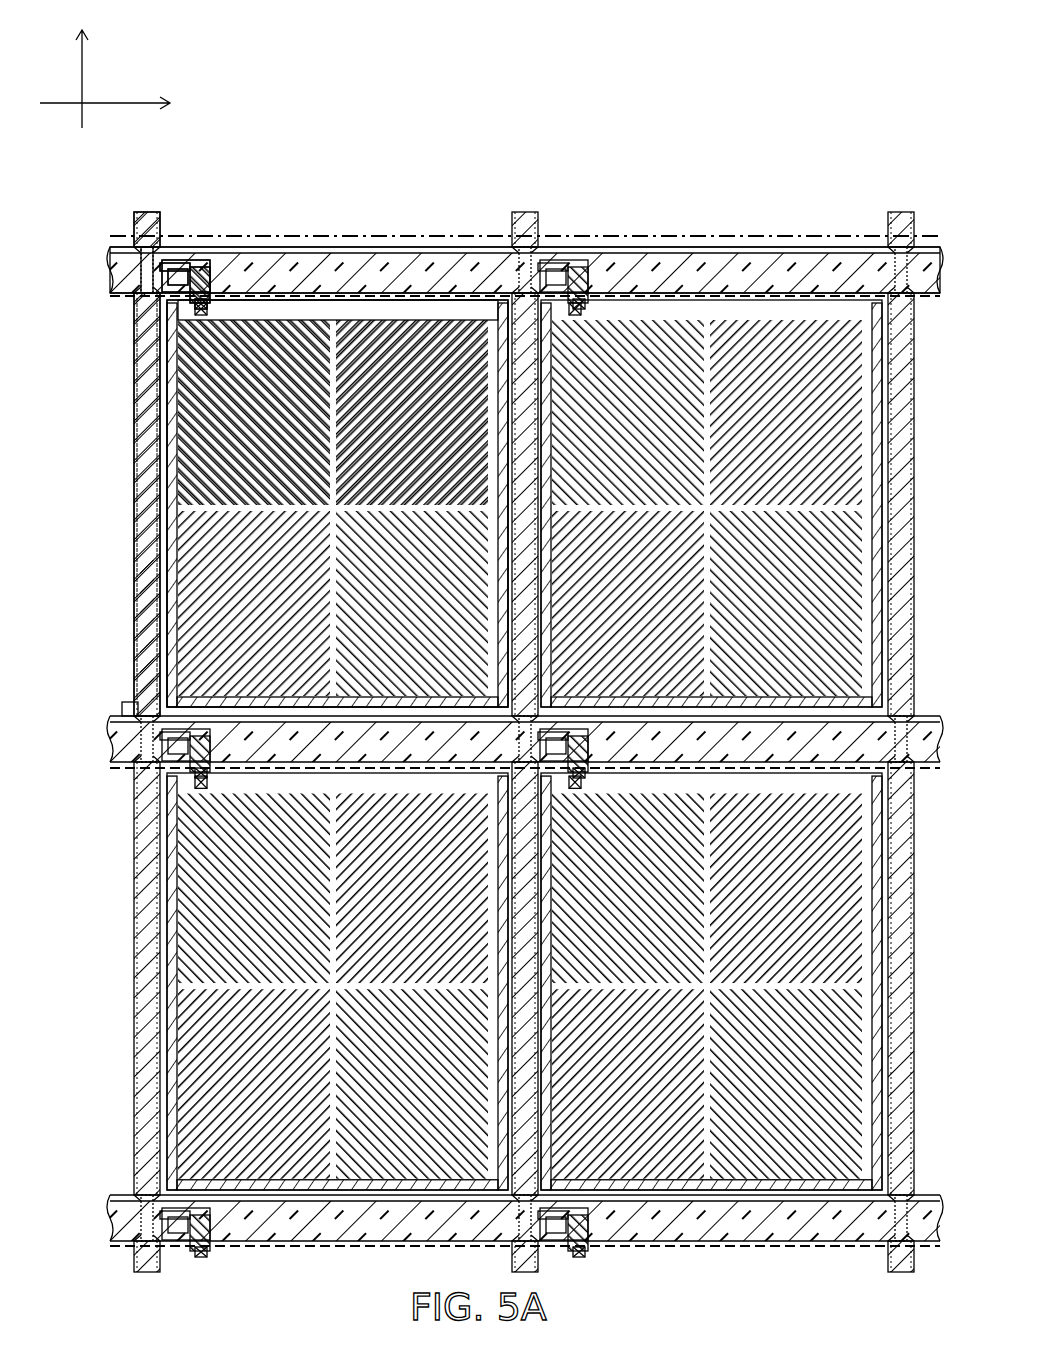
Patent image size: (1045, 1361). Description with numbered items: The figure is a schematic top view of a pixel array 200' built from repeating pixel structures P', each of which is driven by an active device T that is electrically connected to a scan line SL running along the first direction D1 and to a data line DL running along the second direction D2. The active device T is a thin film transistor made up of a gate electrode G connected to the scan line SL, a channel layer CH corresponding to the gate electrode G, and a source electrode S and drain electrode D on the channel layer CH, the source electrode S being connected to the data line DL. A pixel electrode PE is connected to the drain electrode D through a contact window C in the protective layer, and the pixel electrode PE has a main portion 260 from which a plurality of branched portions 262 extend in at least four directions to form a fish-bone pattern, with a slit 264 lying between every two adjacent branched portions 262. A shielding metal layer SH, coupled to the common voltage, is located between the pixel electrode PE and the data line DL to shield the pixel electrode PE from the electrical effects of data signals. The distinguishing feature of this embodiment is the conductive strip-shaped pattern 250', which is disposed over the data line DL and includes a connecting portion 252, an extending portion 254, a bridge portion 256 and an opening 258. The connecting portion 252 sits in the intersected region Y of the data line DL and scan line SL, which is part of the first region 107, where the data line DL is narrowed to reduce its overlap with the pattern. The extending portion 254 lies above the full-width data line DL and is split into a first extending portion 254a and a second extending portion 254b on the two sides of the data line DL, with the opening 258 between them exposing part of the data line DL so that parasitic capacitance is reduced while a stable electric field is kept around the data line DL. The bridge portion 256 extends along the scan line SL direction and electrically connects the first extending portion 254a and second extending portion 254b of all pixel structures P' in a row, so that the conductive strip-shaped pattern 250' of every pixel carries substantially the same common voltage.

The first region 107 is at (938, 234).
The pixel array 200' is at (497, 753).
The conductive strip-shaped pattern 250' is at (502, 644).
The connecting portion 252 is at (124, 297).
The extending portion 254 is at (70, 470).
The first extending portion 254a is at (135, 440).
The second extending portion 254b is at (155, 556).
The bridge portion 256 is at (133, 243).
The opening 258 is at (140, 636).
The main portion 260 is at (353, 318).
The branched portions 262 is at (402, 320).
The slit 264 is at (450, 320).
The data line DL is at (142, 212).
The scan line SL is at (116, 270).
The active device T is at (282, 172).
The source electrode S is at (166, 262).
The gate electrode G is at (175, 262).
The channel layer CH is at (183, 268).
The drain electrode D is at (206, 268).
The contact window C is at (210, 302).
The pixel electrode PE is at (480, 172).
The pixel structure P' is at (337, 391).
The intersected region Y is at (128, 240).
The shielding metal layer SH is at (126, 708).
The first direction D1 is at (125, 104).
The second direction D2 is at (81, 65).